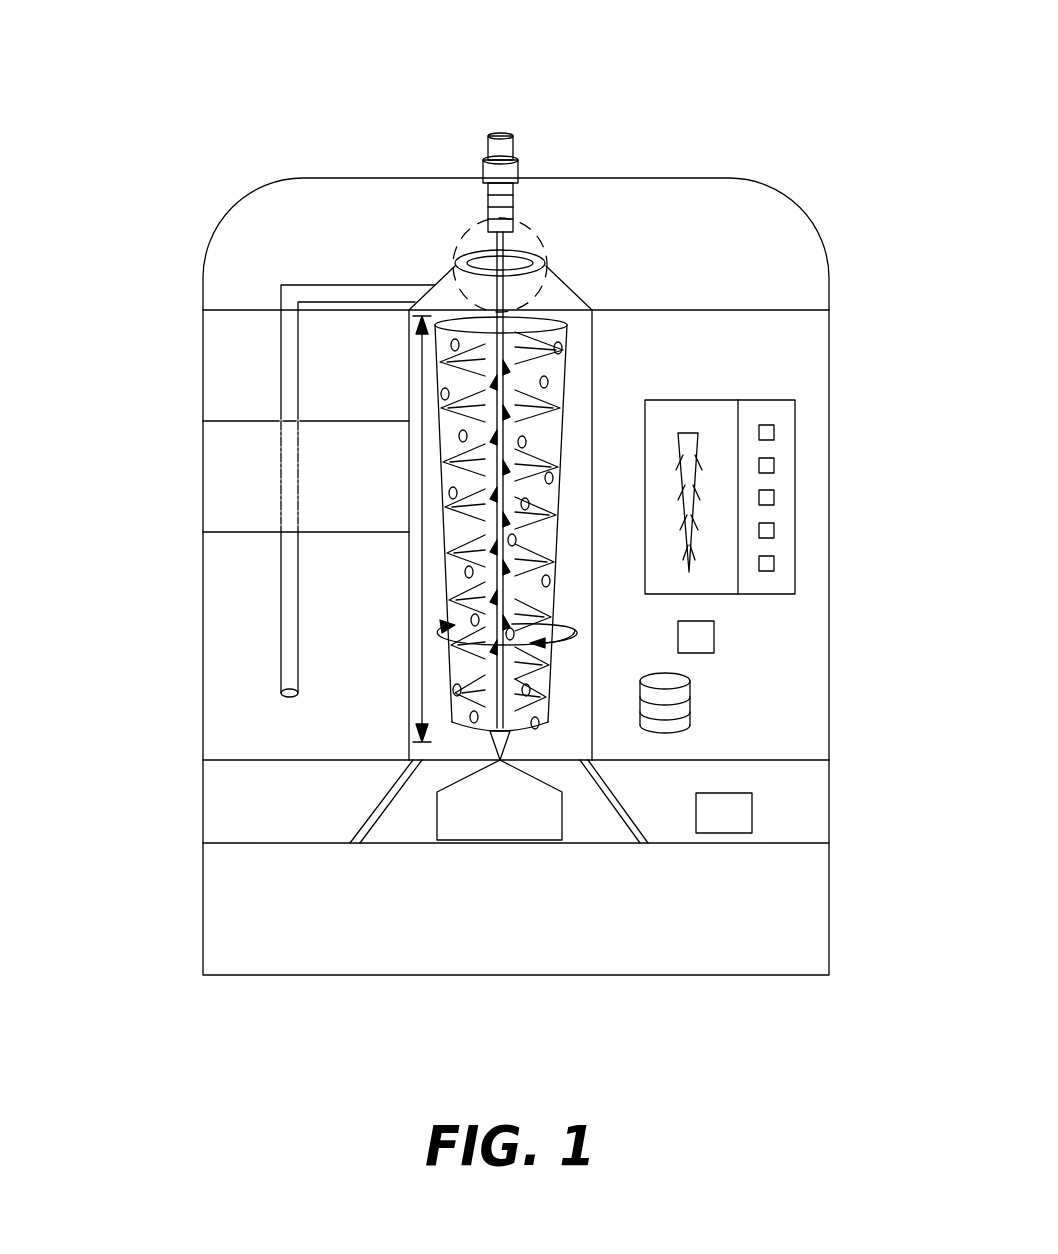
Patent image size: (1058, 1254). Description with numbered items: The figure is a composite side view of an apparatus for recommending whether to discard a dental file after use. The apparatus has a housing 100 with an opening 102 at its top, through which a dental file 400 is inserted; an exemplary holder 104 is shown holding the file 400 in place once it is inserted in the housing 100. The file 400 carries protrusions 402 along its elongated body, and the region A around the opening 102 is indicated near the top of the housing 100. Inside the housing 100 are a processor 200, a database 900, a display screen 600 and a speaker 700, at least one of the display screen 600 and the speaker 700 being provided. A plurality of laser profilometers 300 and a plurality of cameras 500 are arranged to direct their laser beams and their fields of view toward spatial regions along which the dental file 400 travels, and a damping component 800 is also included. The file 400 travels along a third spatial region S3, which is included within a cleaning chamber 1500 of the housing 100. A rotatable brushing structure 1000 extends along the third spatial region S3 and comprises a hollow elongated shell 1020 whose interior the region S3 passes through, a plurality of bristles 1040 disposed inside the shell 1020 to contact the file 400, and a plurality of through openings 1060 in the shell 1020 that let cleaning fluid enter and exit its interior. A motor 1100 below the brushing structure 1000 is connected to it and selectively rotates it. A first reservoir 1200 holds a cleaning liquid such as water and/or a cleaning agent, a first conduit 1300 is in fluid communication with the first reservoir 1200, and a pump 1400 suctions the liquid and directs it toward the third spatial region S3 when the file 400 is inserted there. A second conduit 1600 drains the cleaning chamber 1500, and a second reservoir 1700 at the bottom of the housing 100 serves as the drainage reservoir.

The housing 100 is at (829, 705).
The opening 102 is at (530, 192).
The holder 104 is at (518, 165).
The processor 200 is at (714, 636).
The laser profilometers 300 is at (306, 246).
The dental file 400 is at (492, 145).
The protrusions 402 is at (522, 505).
The cameras 500 is at (306, 246).
The display screen 600 is at (722, 517).
The speaker 700 is at (752, 810).
The damping component 800 is at (455, 265).
The database 900 is at (690, 695).
The rotatable brushing structure 1000 is at (568, 716).
The hollow elongated shell 1020 is at (595, 400).
The bristles 1040 is at (540, 337).
The through openings 1060 is at (562, 347).
The motor 1100 is at (437, 822).
The first reservoir 1200 is at (245, 718).
The first conduit 1300 is at (281, 652).
The pump 1400 is at (258, 472).
The cleaning chamber 1500 is at (416, 702).
The second conduit 1600 is at (370, 812).
The second reservoir 1700 is at (270, 920).
The third spatial region S3 is at (410, 532).
The connection region A is at (558, 245).